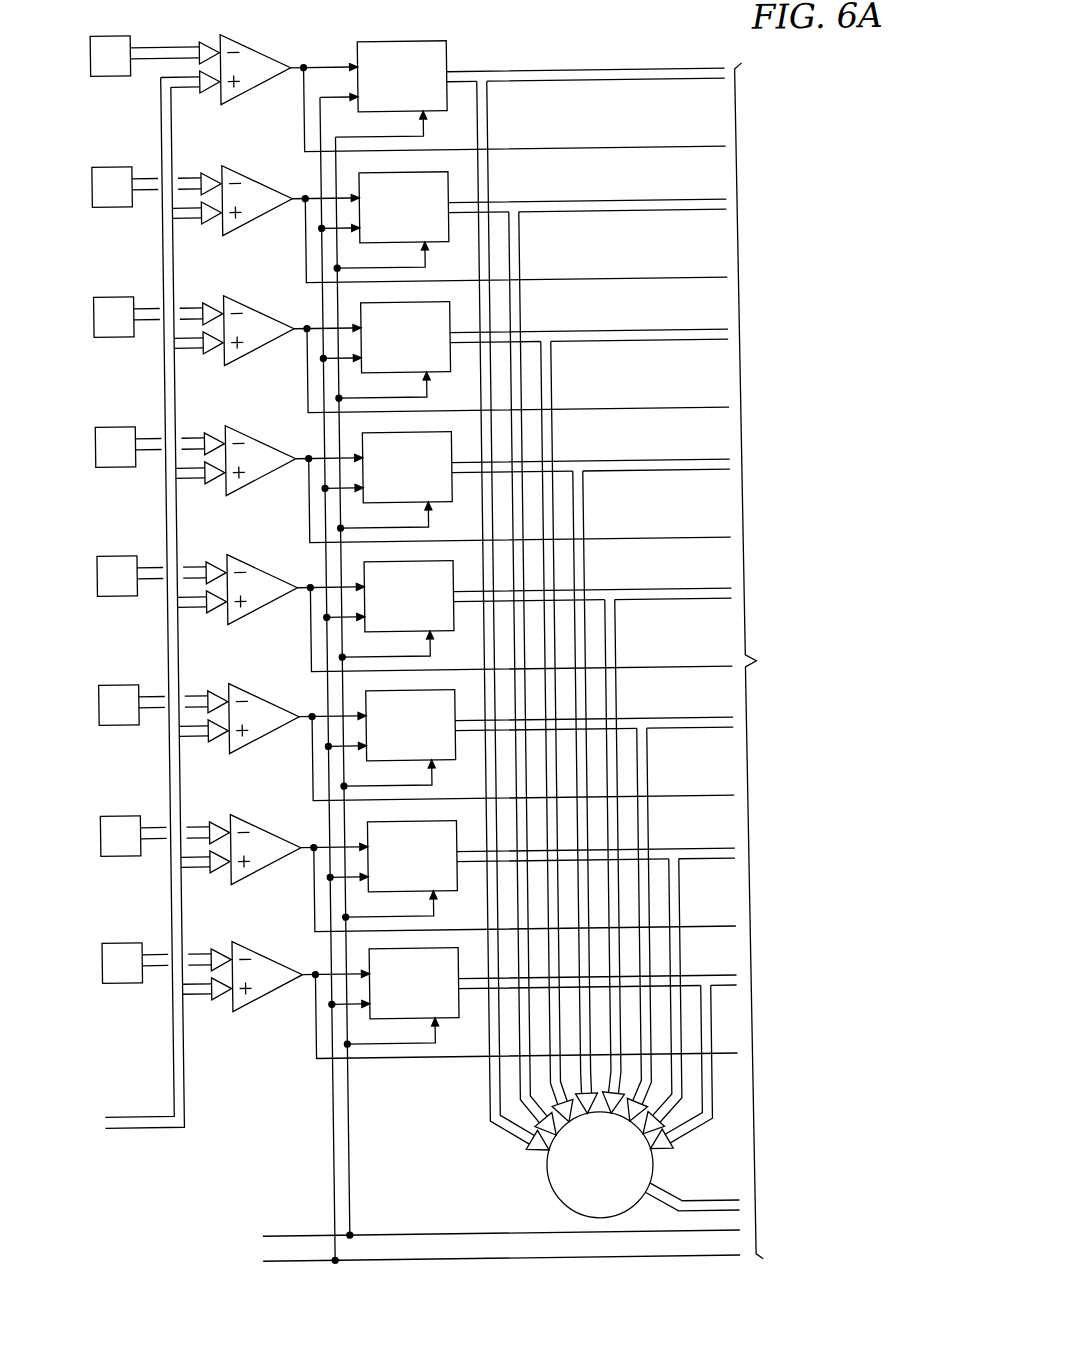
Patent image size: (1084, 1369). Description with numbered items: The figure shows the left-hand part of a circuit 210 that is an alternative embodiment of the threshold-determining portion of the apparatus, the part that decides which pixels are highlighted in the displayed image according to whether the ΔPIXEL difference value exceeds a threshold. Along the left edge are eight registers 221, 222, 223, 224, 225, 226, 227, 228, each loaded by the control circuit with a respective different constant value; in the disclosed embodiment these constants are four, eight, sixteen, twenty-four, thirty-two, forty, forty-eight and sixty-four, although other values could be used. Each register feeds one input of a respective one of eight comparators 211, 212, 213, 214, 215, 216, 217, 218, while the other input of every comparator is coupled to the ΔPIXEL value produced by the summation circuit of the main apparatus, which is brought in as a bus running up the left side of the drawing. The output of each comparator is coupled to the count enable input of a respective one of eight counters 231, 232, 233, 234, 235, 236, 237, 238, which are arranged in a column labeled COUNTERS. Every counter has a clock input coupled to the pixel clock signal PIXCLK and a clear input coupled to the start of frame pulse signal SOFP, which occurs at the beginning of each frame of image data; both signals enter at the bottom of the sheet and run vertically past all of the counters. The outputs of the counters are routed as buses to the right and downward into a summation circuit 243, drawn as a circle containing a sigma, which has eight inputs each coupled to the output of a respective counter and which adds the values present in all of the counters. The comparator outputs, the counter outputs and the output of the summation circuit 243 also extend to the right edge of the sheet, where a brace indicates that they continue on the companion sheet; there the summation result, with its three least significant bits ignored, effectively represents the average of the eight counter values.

The circuit 210 is at (804, 203).
The comparator 211 is at (258, 46).
The comparator 212 is at (260, 181).
The comparator 213 is at (260, 310).
The comparator 214 is at (260, 441).
The comparator 215 is at (265, 602).
The comparator 216 is at (265, 731).
The comparator 217 is at (265, 862).
The comparator 218 is at (265, 989).
The register 221 is at (133, 37).
The register 222 is at (111, 164).
The register 223 is at (111, 294).
The register 224 is at (111, 424).
The register 225 is at (110, 593).
The register 226 is at (110, 722).
The register 227 is at (110, 853).
The register 228 is at (110, 980).
The counter 231 is at (439, 76).
The counter 232 is at (439, 207).
The counter 233 is at (439, 337).
The counter 234 is at (439, 467).
The counter 235 is at (439, 596).
The counter 236 is at (439, 725).
The counter 237 is at (439, 856).
The counter 238 is at (439, 983).
The summation circuit 243 is at (533, 1168).